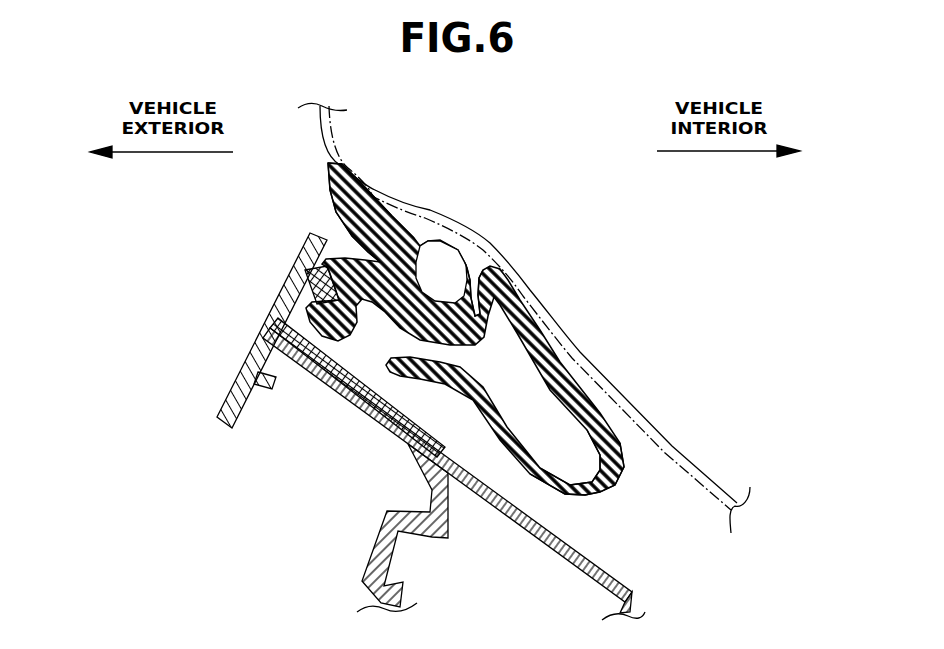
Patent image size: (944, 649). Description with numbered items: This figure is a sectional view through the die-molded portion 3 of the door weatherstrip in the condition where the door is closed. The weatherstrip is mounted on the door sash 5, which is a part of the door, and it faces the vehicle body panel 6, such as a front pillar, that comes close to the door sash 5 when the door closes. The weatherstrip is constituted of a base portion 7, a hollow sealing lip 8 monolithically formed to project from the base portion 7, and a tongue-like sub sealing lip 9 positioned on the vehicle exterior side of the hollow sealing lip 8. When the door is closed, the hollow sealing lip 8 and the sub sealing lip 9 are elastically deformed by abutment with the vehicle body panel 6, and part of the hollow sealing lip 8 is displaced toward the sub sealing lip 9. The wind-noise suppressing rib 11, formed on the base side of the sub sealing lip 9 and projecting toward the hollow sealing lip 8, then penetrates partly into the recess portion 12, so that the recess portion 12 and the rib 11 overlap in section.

The die-molded portion 3 is at (456, 344).
The door sash 5 is at (360, 418).
The vehicle body panel 6 is at (634, 421).
The base portion 7 is at (330, 338).
The hollow sealing lip 8 is at (605, 478).
The sub sealing lip 9 is at (340, 185).
The wind-noise suppressing rib 11 is at (437, 270).
The recess portion 12 is at (476, 291).